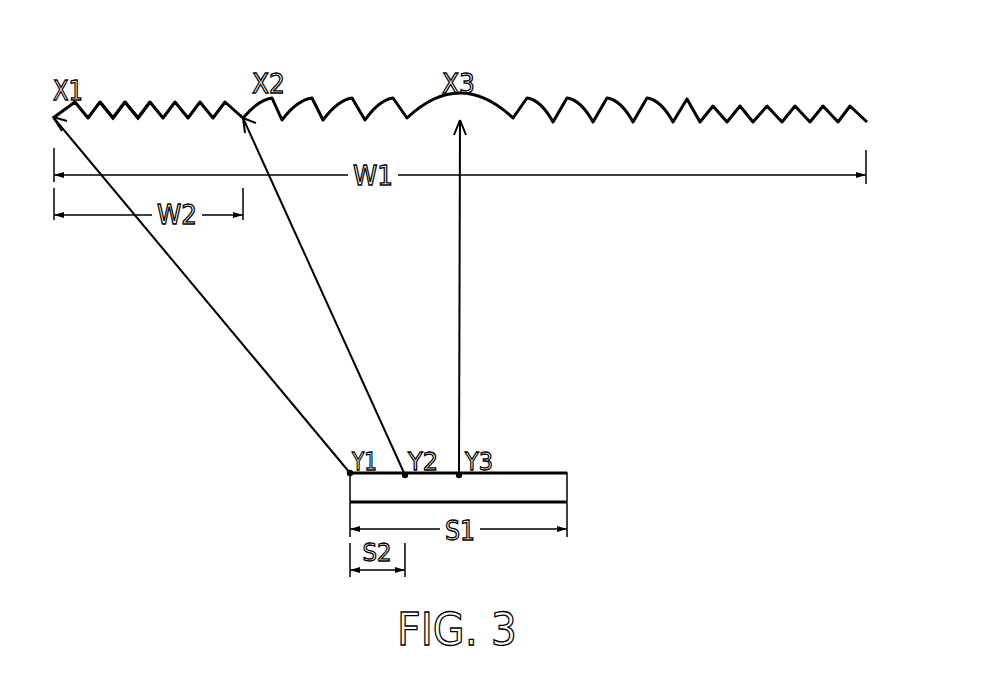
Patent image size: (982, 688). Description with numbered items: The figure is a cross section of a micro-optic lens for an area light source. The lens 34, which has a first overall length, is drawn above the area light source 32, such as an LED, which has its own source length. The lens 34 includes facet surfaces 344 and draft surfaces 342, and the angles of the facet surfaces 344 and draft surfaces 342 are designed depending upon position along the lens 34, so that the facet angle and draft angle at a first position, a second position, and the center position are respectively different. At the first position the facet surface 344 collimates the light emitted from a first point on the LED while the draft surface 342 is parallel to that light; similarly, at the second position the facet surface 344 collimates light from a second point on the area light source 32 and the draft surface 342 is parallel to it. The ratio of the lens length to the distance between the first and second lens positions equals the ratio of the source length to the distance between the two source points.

The area light source 32 is at (567, 486).
The lens 34 is at (867, 108).
The draft surface 342 is at (137, 109).
The facet surface 344 is at (113, 110).